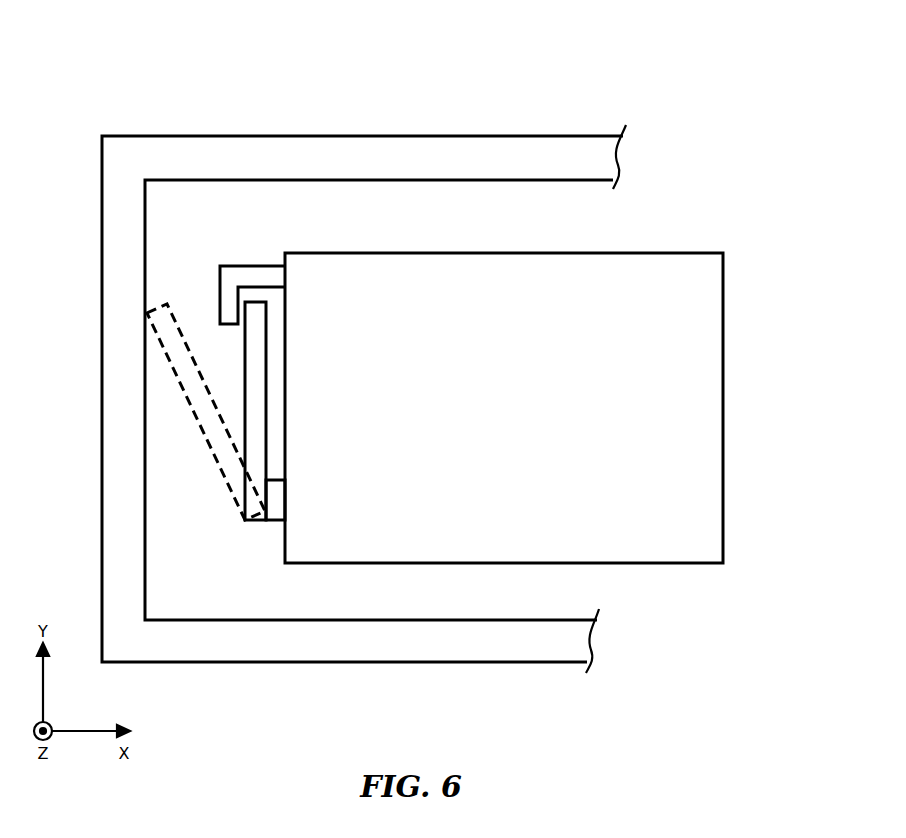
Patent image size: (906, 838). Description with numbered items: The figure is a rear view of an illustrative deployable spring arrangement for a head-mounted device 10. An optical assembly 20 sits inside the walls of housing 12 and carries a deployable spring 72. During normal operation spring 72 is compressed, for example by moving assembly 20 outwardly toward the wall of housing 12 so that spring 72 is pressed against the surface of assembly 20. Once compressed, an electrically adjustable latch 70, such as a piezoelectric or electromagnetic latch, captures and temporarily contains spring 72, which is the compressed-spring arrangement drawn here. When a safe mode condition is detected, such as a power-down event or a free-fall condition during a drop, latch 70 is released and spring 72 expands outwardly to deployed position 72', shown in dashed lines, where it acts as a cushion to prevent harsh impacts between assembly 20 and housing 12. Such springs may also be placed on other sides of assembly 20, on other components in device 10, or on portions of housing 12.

The device 10 is at (490, 51).
The housing 12 is at (354, 661).
The optical assembly 20 is at (723, 408).
The electrically adjustable latch 70 is at (256, 274).
The spring 72 is at (291, 411).
The deployed position 72' is at (206, 412).